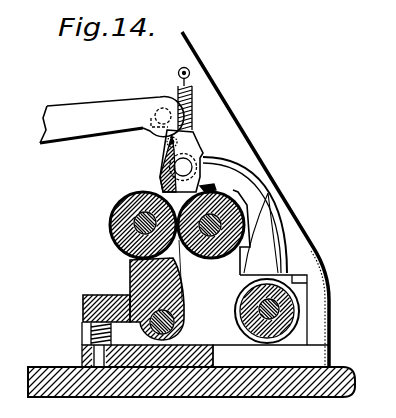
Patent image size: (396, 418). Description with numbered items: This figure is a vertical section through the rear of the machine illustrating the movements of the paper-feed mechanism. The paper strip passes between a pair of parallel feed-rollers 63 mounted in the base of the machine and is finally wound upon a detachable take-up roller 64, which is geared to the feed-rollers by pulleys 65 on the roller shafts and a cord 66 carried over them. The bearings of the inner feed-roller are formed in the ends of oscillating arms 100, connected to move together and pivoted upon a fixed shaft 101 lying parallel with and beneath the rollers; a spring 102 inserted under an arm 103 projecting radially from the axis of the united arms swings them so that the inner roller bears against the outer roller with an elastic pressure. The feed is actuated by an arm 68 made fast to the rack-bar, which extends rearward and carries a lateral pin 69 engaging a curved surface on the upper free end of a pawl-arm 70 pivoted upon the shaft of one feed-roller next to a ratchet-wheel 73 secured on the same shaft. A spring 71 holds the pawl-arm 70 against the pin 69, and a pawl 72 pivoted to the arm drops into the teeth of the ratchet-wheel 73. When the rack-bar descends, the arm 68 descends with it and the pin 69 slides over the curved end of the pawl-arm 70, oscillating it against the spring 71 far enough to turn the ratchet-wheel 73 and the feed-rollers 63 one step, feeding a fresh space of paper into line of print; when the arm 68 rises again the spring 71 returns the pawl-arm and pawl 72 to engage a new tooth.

The feed-rollers 63 is at (110, 228).
The take-up roller 64 is at (236, 321).
The pulleys 65 is at (250, 243).
The cord 66 is at (282, 259).
The arm 68 is at (112, 120).
The lateral pin 69 is at (160, 109).
The pawl-arm 70 is at (181, 161).
The spring 71 is at (193, 106).
The pawl 72 is at (163, 182).
The ratchet-wheel 73 is at (211, 188).
The oscillating arms 100 is at (130, 277).
The fixed shaft 101 is at (176, 317).
The spring 102 is at (90, 333).
The arm 103 is at (83, 299).